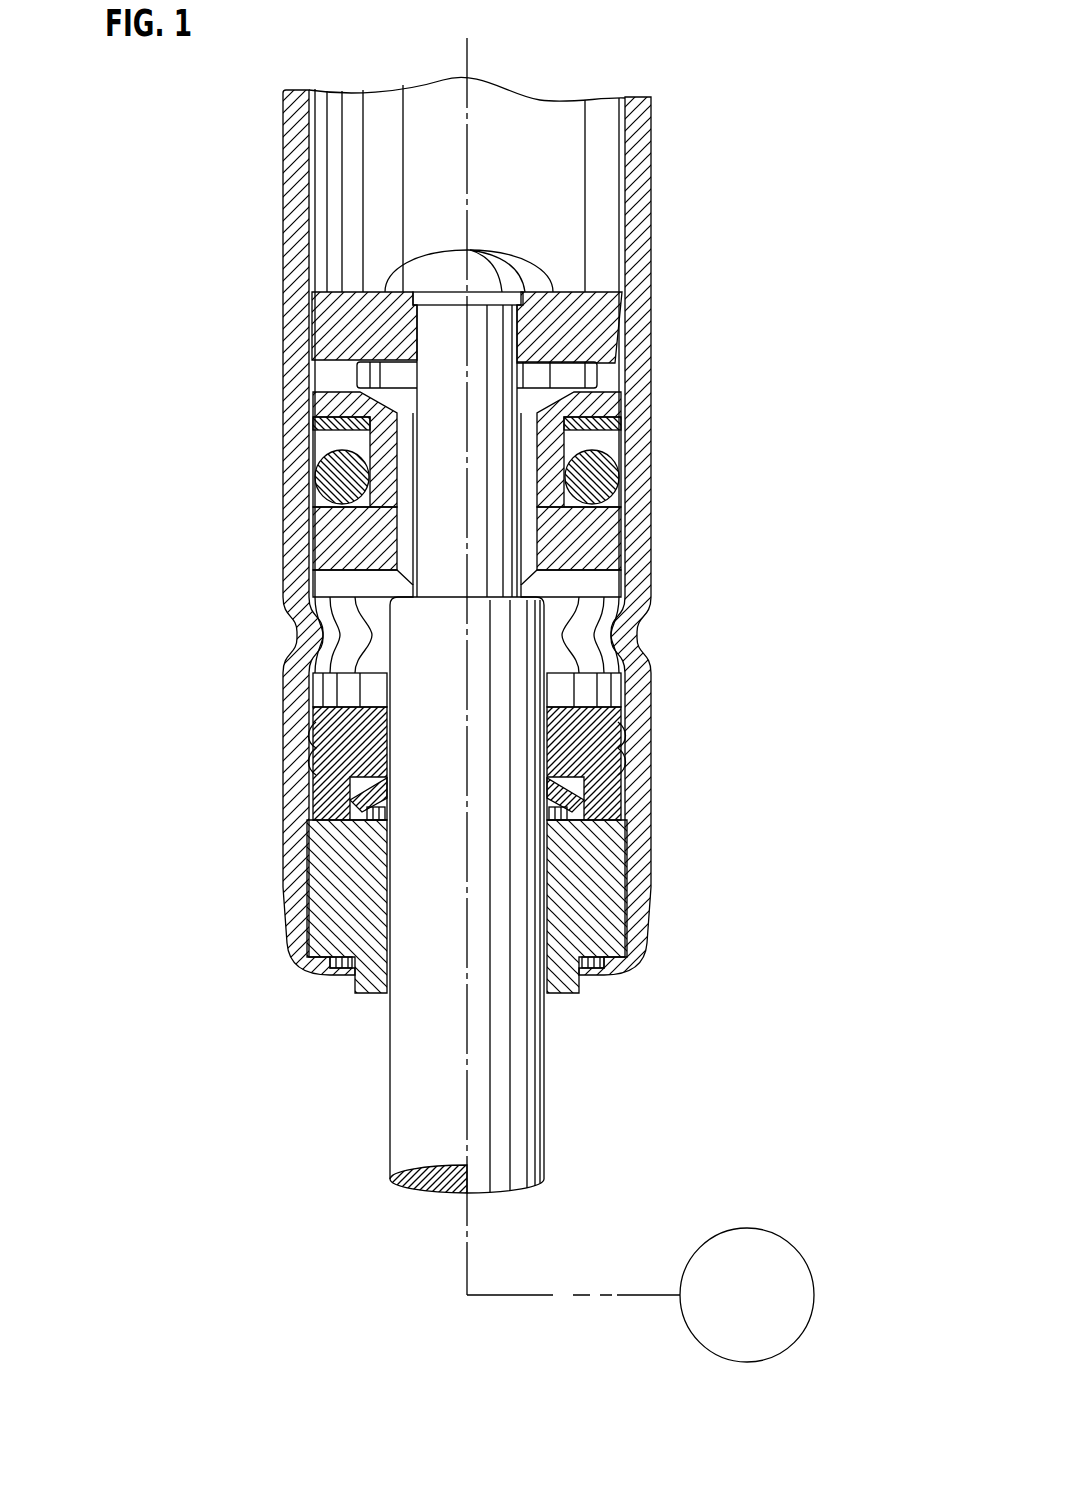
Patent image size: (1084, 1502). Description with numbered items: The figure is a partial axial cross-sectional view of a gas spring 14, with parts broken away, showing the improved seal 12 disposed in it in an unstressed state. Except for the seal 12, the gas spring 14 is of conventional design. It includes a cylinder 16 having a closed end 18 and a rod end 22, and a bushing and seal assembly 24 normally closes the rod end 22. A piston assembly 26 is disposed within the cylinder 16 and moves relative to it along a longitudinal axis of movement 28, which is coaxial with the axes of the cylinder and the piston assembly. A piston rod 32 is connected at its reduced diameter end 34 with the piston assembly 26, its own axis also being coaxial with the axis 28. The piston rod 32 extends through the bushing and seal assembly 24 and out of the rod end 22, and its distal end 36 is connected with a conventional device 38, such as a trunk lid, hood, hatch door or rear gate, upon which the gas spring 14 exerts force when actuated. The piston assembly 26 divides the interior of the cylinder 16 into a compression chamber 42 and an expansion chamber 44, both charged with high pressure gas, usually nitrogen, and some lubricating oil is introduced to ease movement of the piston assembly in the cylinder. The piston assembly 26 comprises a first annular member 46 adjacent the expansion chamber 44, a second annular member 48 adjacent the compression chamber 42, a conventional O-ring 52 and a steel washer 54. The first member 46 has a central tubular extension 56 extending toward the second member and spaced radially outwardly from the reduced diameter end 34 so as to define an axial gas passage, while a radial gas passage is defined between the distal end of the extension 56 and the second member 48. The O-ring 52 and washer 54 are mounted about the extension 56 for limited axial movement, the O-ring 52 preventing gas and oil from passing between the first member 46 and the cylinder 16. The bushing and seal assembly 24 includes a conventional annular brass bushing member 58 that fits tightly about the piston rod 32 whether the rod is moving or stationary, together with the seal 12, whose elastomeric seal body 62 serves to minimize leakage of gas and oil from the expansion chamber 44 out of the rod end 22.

The seal 12 is at (628, 752).
The gas spring 14 is at (672, 522).
The cylinder 16 is at (638, 198).
The closed end 18 is at (547, 127).
The rod end 22 is at (638, 958).
The bushing and seal assembly 24 is at (337, 855).
The piston assembly 26 is at (333, 385).
The longitudinal axis of movement 28 is at (467, 52).
The piston rod 32 is at (540, 633).
The reduced diameter end 34 is at (480, 315).
The distal end 36 is at (555, 1295).
The device 38 is at (733, 1310).
The compression chamber 42 is at (542, 207).
The expansion chamber 44 is at (367, 646).
The first annular member 46 is at (607, 550).
The second annular member 48 is at (605, 318).
The O-ring 52 is at (317, 497).
The steel washer 54 is at (330, 438).
The tubular extension 56 is at (557, 407).
The bushing member 58 is at (600, 876).
The seal body 62 is at (323, 750).